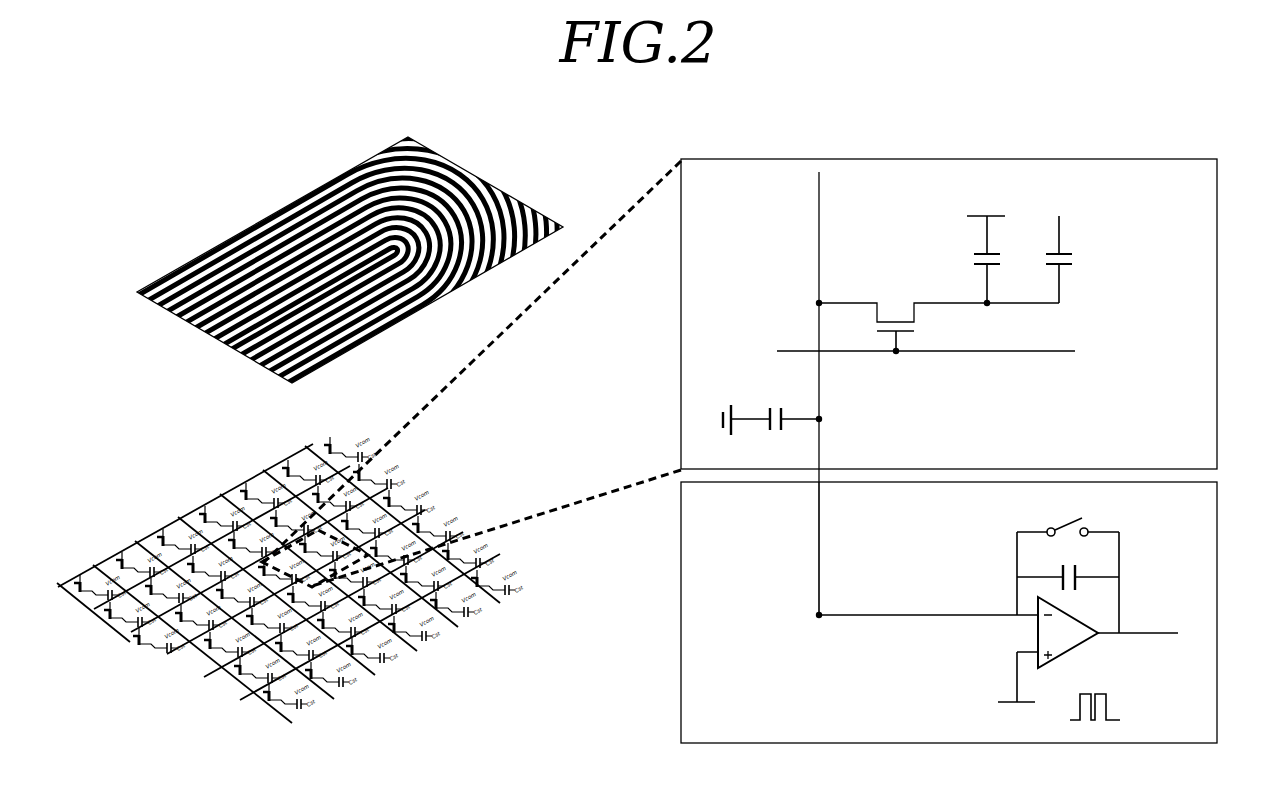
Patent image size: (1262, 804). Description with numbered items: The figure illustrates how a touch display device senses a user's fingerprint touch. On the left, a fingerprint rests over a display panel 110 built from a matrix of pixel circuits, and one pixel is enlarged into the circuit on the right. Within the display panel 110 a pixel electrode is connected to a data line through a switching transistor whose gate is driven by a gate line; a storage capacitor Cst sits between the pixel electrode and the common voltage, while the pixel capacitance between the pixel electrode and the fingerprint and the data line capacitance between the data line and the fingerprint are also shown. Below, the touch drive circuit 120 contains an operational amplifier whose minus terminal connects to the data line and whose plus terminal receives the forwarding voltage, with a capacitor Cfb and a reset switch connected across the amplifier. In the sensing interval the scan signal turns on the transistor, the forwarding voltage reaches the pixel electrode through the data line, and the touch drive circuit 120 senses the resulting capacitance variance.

The display panel 110 is at (949, 294).
The touch drive circuit 120 is at (949, 642).
The storage capacitor Cst is at (998, 247).
The capacitor Cfb is at (1068, 566).